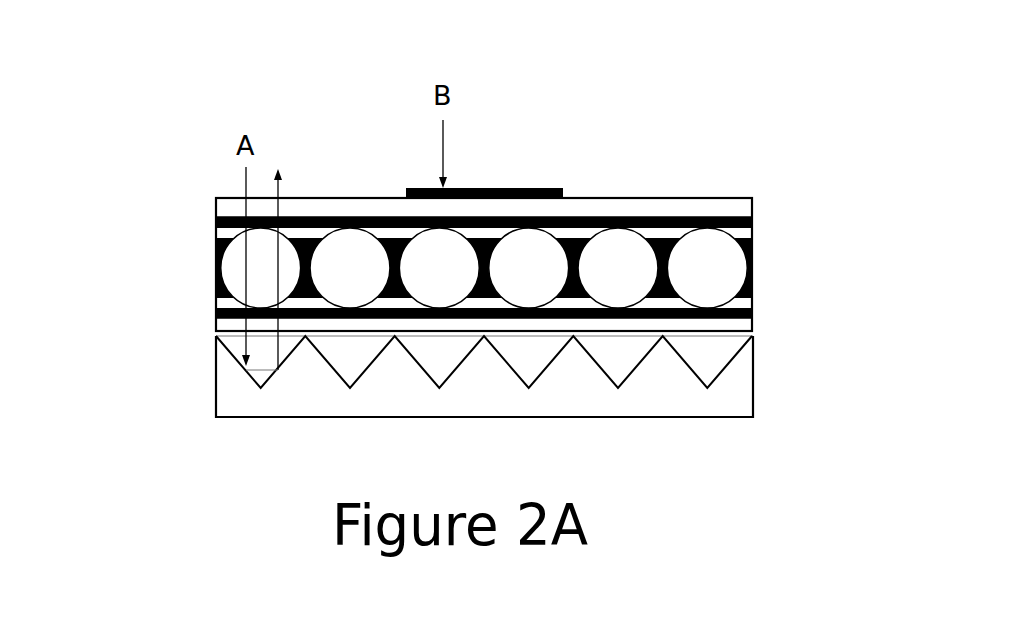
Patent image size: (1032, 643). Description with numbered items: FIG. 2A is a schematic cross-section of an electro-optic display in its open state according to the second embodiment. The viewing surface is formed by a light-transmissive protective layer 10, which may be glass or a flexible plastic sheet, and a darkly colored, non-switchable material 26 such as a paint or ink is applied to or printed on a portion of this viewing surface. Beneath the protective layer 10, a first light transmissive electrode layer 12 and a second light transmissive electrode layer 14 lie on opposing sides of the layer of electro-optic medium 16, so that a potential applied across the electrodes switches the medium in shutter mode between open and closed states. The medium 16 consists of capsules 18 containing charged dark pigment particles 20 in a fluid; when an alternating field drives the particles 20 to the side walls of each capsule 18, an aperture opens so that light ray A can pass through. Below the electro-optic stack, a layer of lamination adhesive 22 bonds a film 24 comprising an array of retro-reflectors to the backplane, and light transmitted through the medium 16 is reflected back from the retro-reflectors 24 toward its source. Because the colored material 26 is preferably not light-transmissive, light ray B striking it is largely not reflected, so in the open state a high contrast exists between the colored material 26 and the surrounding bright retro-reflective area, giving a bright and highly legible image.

The light-transmissive protective layer 10 is at (753, 208).
The first light transmissive electrode layer 12 is at (753, 223).
The second light transmissive electrode layer 14 is at (216, 315).
The layer of electro-optic medium 16 is at (216, 236).
The capsule 18 is at (753, 311).
The charged particles 20 is at (753, 270).
The layer of lamination adhesive 22 is at (216, 330).
The film comprising an array of retro-reflectors 24 is at (753, 372).
The darkly colored material 26 is at (563, 190).